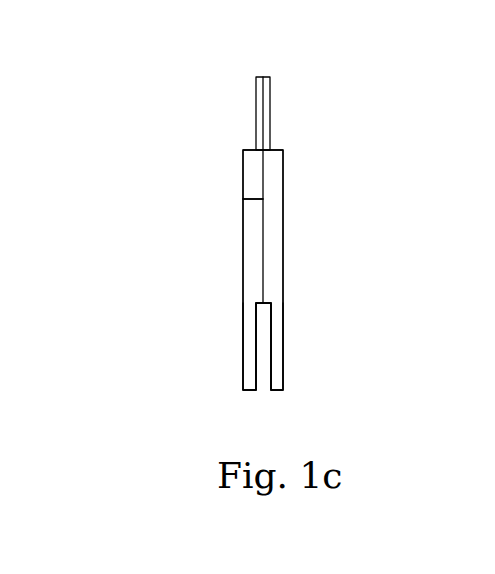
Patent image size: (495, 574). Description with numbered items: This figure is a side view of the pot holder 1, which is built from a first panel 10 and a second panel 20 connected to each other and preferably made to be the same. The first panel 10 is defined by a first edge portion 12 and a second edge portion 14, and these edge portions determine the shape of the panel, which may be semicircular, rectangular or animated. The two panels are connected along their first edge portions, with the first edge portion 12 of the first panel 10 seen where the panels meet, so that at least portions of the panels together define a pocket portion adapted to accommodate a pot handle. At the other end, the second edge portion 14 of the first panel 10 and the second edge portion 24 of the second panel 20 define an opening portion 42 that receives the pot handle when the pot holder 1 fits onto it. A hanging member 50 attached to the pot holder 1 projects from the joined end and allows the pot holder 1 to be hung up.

The pot holder 1 is at (392, 150).
The hanging member 50 is at (270, 105).
The first edge portion 12 is at (243, 199).
The first panel 10 is at (278, 247).
The second panel 20 is at (248, 275).
The second edge portion 24 is at (255, 355).
The second edge portion 14 is at (272, 348).
The opening portion 42 is at (265, 369).